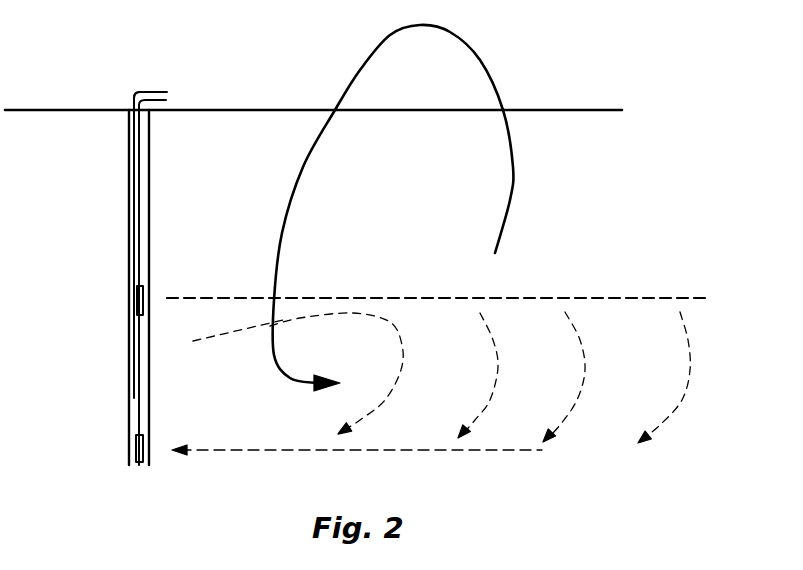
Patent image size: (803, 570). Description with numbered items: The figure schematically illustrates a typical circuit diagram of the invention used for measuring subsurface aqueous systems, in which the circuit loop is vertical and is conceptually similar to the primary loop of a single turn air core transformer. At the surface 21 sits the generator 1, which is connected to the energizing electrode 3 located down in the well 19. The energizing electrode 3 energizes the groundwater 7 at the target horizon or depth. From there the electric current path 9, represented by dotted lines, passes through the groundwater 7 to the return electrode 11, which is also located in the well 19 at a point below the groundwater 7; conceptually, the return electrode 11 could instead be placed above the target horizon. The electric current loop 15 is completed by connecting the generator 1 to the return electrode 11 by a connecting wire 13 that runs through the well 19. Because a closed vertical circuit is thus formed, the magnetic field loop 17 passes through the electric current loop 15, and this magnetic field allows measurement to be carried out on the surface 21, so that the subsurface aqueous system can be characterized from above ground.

The generator 1 is at (167, 91).
The energizing electrode 3 is at (137, 298).
The groundwater 7 is at (397, 297).
The electric current path 9 is at (399, 380).
The return electrode 11 is at (136, 447).
The connecting wire 13 is at (134, 93).
The electric current loop 15 is at (228, 336).
The magnetic field loop 17 is at (486, 50).
The well 19 is at (128, 212).
The surface 21 is at (580, 109).